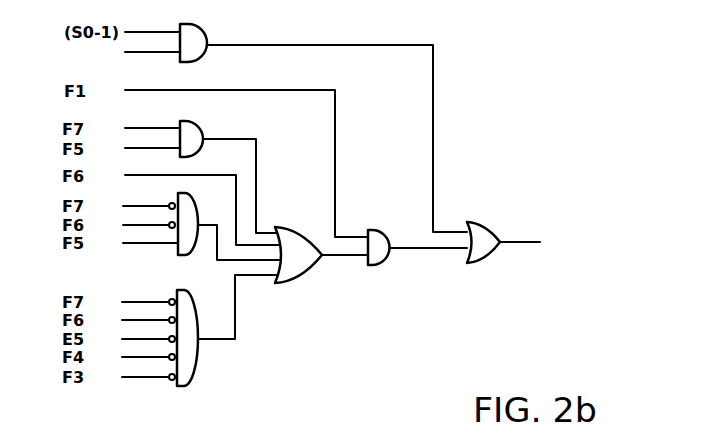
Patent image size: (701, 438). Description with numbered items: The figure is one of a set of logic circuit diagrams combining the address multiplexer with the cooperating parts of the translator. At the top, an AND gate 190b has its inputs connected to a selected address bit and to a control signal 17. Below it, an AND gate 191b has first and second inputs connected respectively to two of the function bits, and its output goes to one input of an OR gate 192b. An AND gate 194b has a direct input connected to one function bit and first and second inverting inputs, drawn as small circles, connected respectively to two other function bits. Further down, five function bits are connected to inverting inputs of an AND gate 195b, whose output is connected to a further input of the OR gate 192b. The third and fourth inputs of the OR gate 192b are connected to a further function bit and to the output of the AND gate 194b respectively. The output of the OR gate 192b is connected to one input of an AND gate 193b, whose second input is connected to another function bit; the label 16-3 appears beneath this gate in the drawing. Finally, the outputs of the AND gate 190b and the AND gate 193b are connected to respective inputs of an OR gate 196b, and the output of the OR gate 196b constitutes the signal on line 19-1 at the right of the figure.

The control signal 17 is at (122, 52).
The AND gate 190b is at (198, 36).
The AND gate 191b is at (192, 136).
The OR gate 192b is at (293, 242).
The AND gate 193b is at (381, 238).
The AND gate 194b is at (190, 212).
The AND gate 195b is at (189, 358).
The OR gate 196b is at (488, 240).
The signal line 16-3 is at (420, 289).
The line 19-1 is at (548, 243).